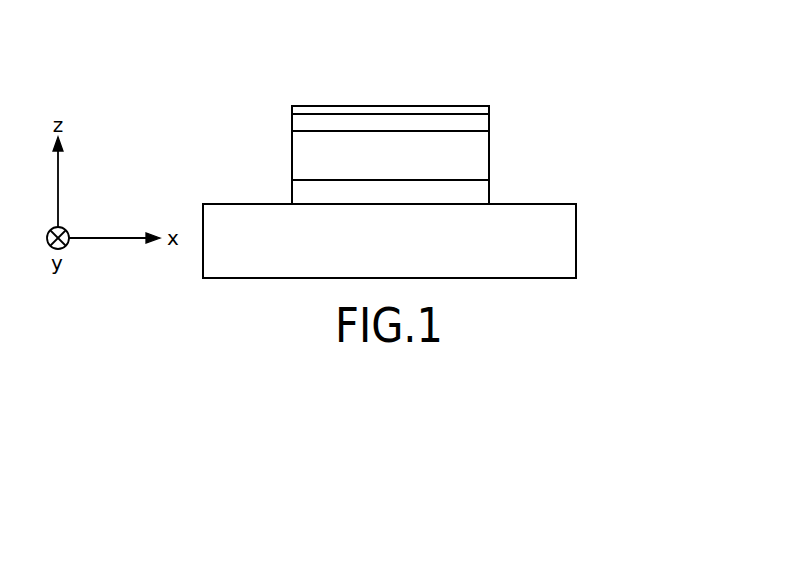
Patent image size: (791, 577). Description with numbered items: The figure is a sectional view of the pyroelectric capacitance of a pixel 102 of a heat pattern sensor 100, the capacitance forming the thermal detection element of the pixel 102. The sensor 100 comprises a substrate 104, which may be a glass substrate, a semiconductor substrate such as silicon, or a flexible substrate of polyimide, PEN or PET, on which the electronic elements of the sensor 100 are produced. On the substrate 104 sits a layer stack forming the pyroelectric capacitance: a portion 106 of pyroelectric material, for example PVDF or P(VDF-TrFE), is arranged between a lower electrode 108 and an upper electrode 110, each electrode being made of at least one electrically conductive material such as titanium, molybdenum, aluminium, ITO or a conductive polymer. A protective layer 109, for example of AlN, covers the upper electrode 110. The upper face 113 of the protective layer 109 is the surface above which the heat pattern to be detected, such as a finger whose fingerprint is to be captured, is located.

The heat pattern sensor 100 is at (624, 84).
The pixel 102 is at (502, 86).
The substrate 104 is at (562, 236).
The portion of pyroelectric material 106 is at (477, 152).
The lower electrode 108 is at (478, 192).
The protective layer 109 is at (427, 112).
The upper electrode 110 is at (302, 123).
The upper face 113 is at (338, 96).